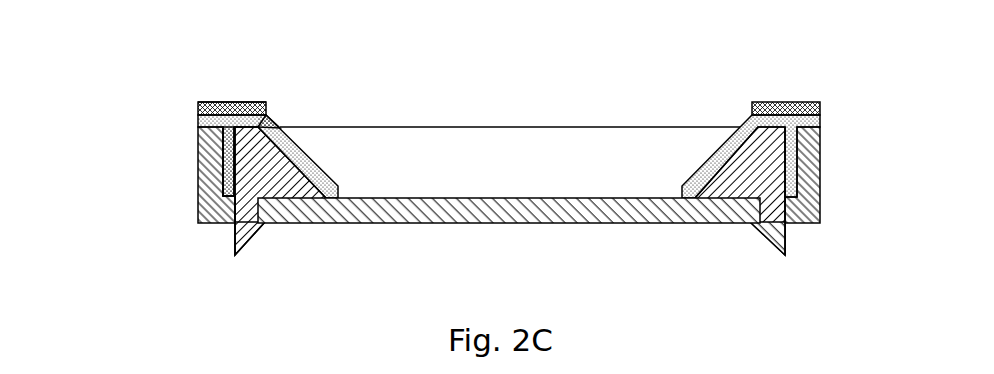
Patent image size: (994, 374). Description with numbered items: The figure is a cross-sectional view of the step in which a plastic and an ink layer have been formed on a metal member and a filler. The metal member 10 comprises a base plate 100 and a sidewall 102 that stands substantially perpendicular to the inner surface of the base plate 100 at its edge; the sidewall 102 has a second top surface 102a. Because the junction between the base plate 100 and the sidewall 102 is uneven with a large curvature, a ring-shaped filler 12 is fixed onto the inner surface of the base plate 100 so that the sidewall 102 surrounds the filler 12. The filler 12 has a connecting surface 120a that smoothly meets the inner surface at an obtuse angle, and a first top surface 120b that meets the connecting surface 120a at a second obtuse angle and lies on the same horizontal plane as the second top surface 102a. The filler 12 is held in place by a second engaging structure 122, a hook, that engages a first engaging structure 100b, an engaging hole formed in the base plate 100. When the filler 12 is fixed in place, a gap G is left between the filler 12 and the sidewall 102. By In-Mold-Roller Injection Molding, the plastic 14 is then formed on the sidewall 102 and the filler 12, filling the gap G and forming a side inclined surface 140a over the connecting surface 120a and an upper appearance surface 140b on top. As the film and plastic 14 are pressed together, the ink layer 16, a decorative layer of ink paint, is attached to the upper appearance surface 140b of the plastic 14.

The metal member 10 is at (98, 187).
The base plate 100 is at (393, 223).
The first engaging structure 100b is at (226, 216).
The sidewall 102 is at (197, 210).
The second top surface 102a is at (200, 102).
The filler 12 is at (250, 164).
The plastic 14 is at (198, 120).
The ink layer 16 is at (198, 105).
The gap G is at (205, 143).
The connecting surface 120a is at (288, 145).
The first top surface 120b is at (252, 126).
The second engaging structure 122 is at (249, 244).
The side inclined surface 140a is at (333, 178).
The upper appearance surface 140b is at (236, 116).